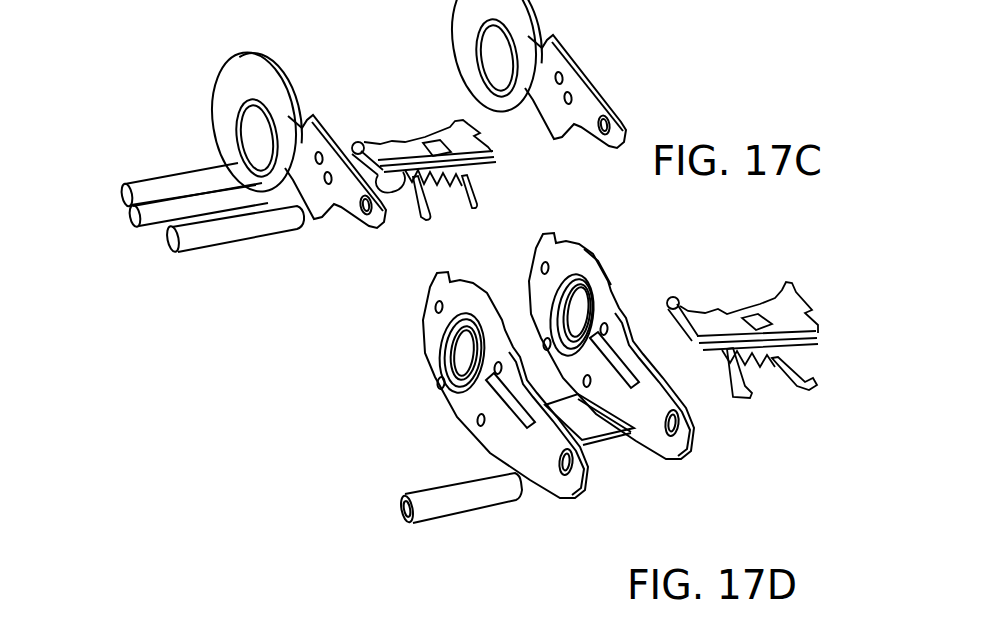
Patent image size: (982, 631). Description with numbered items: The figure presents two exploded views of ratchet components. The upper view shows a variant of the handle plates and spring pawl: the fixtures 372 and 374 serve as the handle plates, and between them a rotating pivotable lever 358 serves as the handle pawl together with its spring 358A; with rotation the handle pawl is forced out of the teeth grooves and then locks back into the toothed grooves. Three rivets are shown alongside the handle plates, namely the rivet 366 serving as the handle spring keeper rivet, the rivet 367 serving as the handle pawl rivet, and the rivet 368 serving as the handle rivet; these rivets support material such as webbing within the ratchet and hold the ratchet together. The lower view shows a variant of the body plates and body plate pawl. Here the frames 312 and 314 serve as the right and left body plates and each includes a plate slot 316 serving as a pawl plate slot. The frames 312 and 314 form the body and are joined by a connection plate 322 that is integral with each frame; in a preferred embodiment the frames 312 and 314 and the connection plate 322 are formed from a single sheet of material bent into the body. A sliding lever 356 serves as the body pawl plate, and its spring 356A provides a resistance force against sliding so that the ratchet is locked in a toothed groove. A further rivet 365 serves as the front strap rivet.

In FIG. 17C, the fixture 374 is at (216, 83).
In FIG. 17C, the fixture 372 is at (512, 10).
In FIG. 17C, the rotating pivotable lever 358 is at (437, 128).
In FIG. 17C, the spring 358A is at (474, 212).
In FIG. 17C, the rivet 366 is at (112, 193).
In FIG. 17C, the rivet 367 is at (135, 226).
In FIG. 17C, the rivet 368 is at (193, 257).
In FIG. 17D, the frame 314 is at (433, 317).
In FIG. 17D, the frame 312 is at (587, 270).
In FIG. 17D, the tab 316 is at (507, 407).
In FIG. 17D, the connection plate 322 is at (610, 447).
In FIG. 17D, the rivet 365 is at (447, 485).
In FIG. 17D, the sliding lever 356 is at (793, 327).
In FIG. 17D, the spring 356A is at (797, 390).